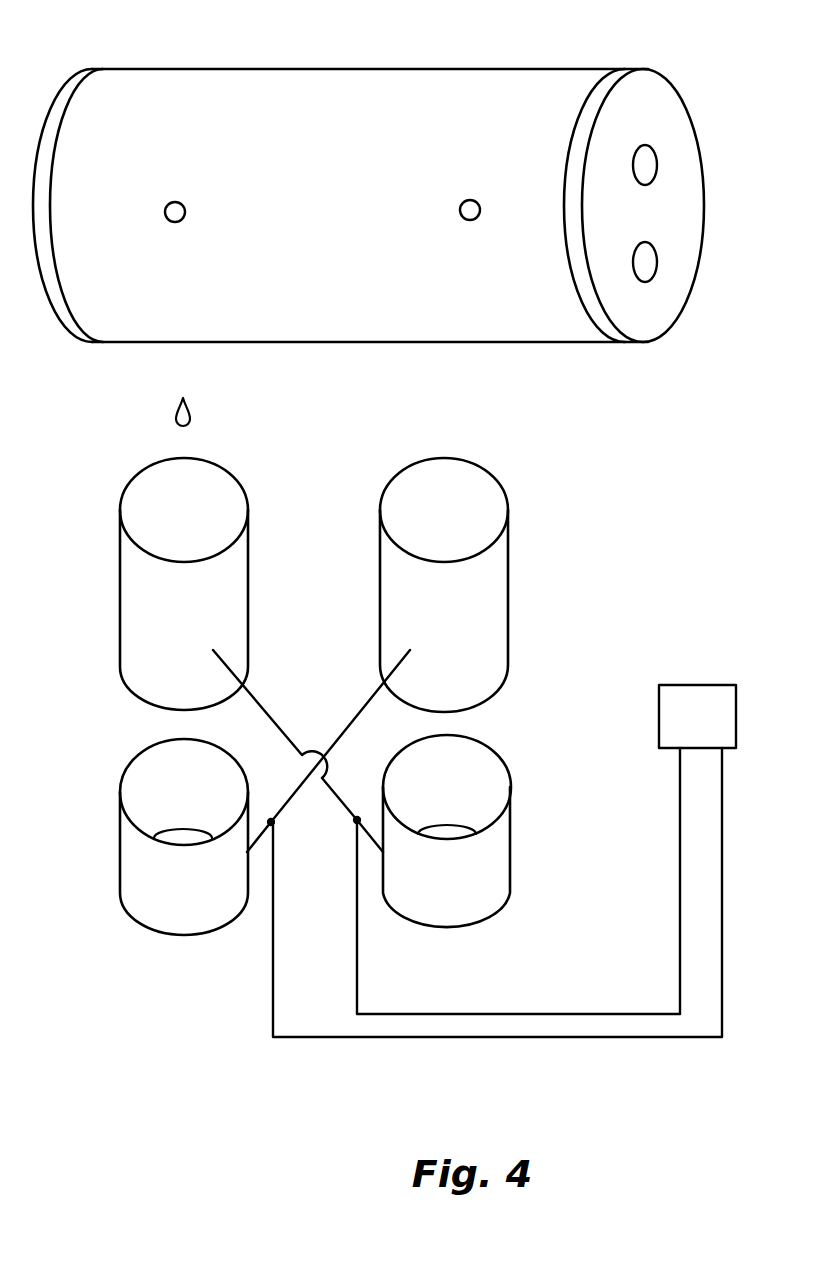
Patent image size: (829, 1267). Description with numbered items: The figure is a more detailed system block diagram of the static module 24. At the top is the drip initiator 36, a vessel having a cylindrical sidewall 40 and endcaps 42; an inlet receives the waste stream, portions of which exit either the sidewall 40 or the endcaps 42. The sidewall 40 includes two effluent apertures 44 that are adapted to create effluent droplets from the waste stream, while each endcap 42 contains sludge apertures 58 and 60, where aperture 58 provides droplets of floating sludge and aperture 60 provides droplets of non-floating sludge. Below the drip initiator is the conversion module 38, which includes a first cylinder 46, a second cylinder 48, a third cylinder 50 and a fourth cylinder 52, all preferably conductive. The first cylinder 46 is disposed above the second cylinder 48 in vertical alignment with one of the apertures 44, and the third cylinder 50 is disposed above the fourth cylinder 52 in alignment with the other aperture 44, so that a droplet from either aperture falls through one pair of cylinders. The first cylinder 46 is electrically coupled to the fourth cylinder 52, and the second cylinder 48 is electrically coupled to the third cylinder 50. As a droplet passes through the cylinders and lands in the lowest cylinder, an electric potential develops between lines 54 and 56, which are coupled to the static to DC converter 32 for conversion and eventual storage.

The static module 24 is at (155, 437).
The static to DC converter 32 is at (685, 728).
The drip initiator 36 is at (414, 175).
The conversion module 38 is at (327, 667).
The cylindrical sidewall 40 is at (415, 70).
The endcaps 42 is at (55, 111).
The effluent apertures 44 is at (185, 211).
The first cylinder 46 is at (118, 580).
The second cylinder 48 is at (118, 860).
The third cylinder 50 is at (508, 580).
The fourth cylinder 52 is at (510, 852).
The line 54 is at (500, 1014).
The line 56 is at (508, 1037).
The sludge aperture 58 is at (655, 152).
The sludge aperture 60 is at (657, 272).